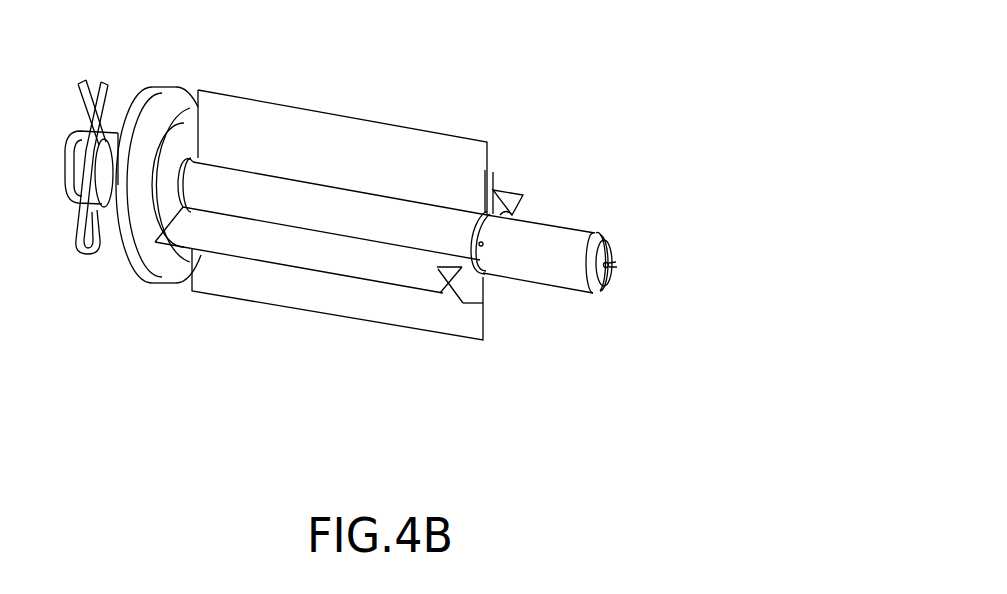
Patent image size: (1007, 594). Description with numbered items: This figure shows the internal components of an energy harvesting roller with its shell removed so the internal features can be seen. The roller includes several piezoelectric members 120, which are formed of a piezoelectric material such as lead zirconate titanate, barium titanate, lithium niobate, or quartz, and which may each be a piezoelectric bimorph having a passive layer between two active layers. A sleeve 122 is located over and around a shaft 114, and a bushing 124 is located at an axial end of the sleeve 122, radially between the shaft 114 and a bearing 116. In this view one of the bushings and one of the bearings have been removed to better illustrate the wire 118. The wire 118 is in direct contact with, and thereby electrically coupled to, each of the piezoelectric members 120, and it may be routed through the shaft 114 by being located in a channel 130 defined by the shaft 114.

The shaft 114 is at (535, 260).
The bearing 116 is at (165, 97).
The wire 118 is at (491, 186).
The piezoelectric member 120 is at (377, 140).
The sleeve 122 is at (332, 209).
The bushing 124 is at (183, 153).
The channel 130 is at (615, 263).